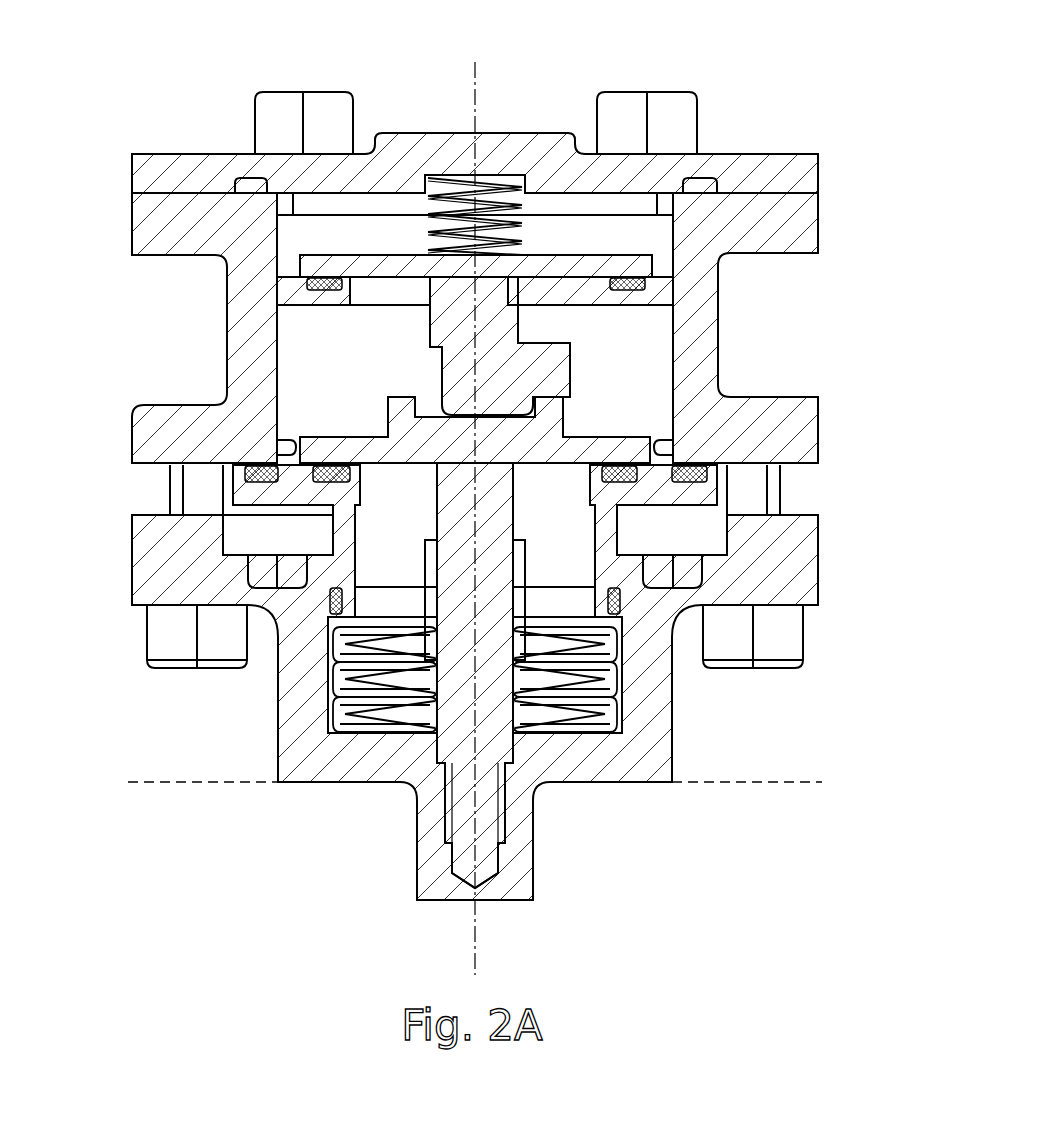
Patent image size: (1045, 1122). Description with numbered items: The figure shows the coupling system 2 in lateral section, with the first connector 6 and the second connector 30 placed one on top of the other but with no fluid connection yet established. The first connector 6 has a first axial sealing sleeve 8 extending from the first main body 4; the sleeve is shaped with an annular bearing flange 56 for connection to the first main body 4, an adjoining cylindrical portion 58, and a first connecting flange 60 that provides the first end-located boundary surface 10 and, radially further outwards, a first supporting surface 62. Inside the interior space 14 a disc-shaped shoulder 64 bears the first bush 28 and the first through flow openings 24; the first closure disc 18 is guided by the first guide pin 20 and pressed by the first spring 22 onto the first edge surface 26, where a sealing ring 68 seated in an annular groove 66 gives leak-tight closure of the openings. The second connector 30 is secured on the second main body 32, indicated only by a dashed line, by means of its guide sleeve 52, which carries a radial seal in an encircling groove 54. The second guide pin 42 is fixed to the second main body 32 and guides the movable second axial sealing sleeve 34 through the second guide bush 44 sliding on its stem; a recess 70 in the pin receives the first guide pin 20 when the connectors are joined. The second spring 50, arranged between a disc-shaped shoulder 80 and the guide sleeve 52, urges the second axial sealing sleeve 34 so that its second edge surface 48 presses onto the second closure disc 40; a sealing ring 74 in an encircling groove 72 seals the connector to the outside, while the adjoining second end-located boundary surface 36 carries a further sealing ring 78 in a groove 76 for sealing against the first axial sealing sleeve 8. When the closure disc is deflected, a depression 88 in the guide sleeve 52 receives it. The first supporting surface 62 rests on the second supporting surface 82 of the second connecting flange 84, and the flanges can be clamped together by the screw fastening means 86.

The coupling system 2 is at (776, 88).
The first main body 4 is at (440, 140).
The first connector 6 is at (827, 258).
The first axial sealing sleeve 8 is at (700, 332).
The first end-located boundary surface 10 is at (700, 435).
The interior space 14 is at (568, 228).
The first closure disc 18 is at (617, 267).
The first guide pin 20 is at (500, 355).
The first spring 22 is at (427, 205).
The first through flow openings 24 is at (367, 293).
The first edge surface 26 is at (268, 285).
The first bush 28 is at (517, 313).
The second connector 30 is at (840, 655).
The second main body 32 is at (768, 795).
The second axial sealing sleeve 34 is at (613, 612).
The second end-located boundary surface 36 is at (687, 482).
The second closure disc 40 is at (330, 447).
The second guide pin 42 is at (492, 713).
The second guide bush 44 is at (430, 650).
The second edge surface 48 is at (617, 472).
The second spring 50 is at (328, 697).
The guide sleeve 52 is at (643, 742).
The encircling groove 54 is at (612, 600).
The annular bearing flange 56 is at (720, 255).
The cylindrical portion 58 is at (828, 255).
The first connecting flange 60 is at (720, 405).
The first supporting surface 62 is at (805, 470).
The disc-shaped shoulder 64 is at (540, 290).
The annular groove 66 is at (283, 288).
The sealing ring 68 is at (323, 278).
The recess 70 is at (423, 403).
The encircling groove 72 is at (633, 463).
The sealing ring 74 is at (607, 464).
The groove 76 is at (713, 474).
The sealing ring 78 is at (710, 458).
The disc-shaped shoulder 80 is at (578, 595).
The second supporting surface 82 is at (146, 498).
The second connecting flange 84 is at (762, 613).
The screw fastening means 86 is at (165, 630).
The depression 88 is at (240, 548).